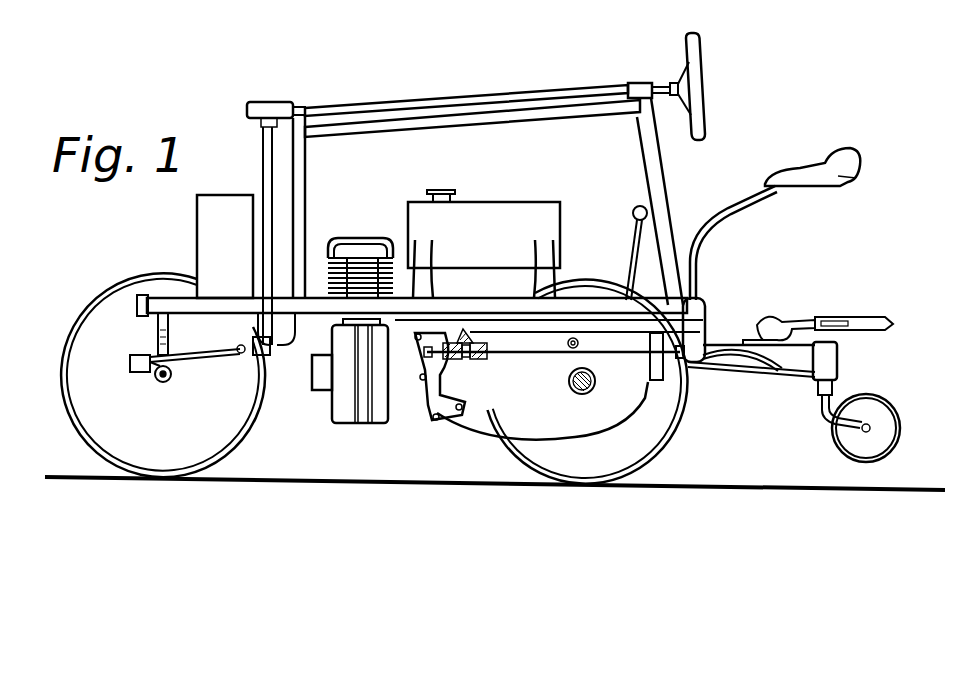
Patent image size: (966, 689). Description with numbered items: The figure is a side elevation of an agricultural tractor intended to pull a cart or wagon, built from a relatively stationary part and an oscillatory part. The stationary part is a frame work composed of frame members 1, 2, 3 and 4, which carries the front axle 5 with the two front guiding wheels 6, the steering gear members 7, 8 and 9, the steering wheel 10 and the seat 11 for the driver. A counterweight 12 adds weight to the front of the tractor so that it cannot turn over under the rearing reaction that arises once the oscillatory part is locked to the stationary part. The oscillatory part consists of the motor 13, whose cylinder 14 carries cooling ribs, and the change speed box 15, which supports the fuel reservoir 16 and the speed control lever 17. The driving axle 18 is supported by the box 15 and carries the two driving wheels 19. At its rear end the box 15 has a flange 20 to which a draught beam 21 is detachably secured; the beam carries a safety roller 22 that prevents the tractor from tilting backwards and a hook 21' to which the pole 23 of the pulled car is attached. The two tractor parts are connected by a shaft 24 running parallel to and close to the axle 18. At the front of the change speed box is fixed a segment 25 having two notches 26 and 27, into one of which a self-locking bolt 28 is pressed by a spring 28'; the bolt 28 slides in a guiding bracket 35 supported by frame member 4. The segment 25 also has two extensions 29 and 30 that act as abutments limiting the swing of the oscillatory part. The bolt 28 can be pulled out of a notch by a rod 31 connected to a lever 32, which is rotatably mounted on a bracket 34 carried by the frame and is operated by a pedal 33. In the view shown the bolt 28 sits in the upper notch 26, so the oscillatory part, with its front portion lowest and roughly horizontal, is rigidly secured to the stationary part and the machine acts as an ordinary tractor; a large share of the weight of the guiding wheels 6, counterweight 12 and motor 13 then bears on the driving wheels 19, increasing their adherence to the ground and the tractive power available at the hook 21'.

The frame member 1 is at (300, 198).
The frame member 2 is at (470, 124).
The frame member 3 is at (658, 200).
The frame member 4 is at (475, 313).
The front axle 5 is at (158, 328).
The front guiding wheel 6 is at (232, 456).
The steering gear member 7 is at (238, 356).
The steering gear member 8 is at (262, 120).
The steering gear member 9 is at (480, 96).
The steering wheel 10 is at (703, 92).
The seat 11 is at (855, 178).
The counterweight 12 is at (208, 230).
The motor 13 is at (342, 399).
The cylinder 14 is at (353, 268).
The change speed box 15 is at (500, 405).
The fuel reservoir 16 is at (482, 222).
The speed control lever 17 is at (632, 247).
The driving axle 18 is at (585, 392).
The driving wheel 19 is at (650, 420).
The flange 20 is at (650, 388).
The draught beam 21 is at (751, 379).
The hook 21' is at (779, 318).
The safety roller 22 is at (893, 430).
The pole 23 is at (858, 318).
The shaft 24 is at (545, 355).
The segment 25 is at (430, 393).
The notch 26 is at (419, 377).
The notch 27 is at (452, 419).
The self-locking bolt 28 is at (455, 363).
The spring 28' is at (495, 363).
The extension 29 is at (462, 404).
The extension 30 is at (443, 340).
The rod 31 is at (648, 355).
The lever 32 is at (700, 346).
The pedal 33 is at (775, 372).
The bracket 34 is at (705, 313).
The guiding bracket 35 is at (466, 358).